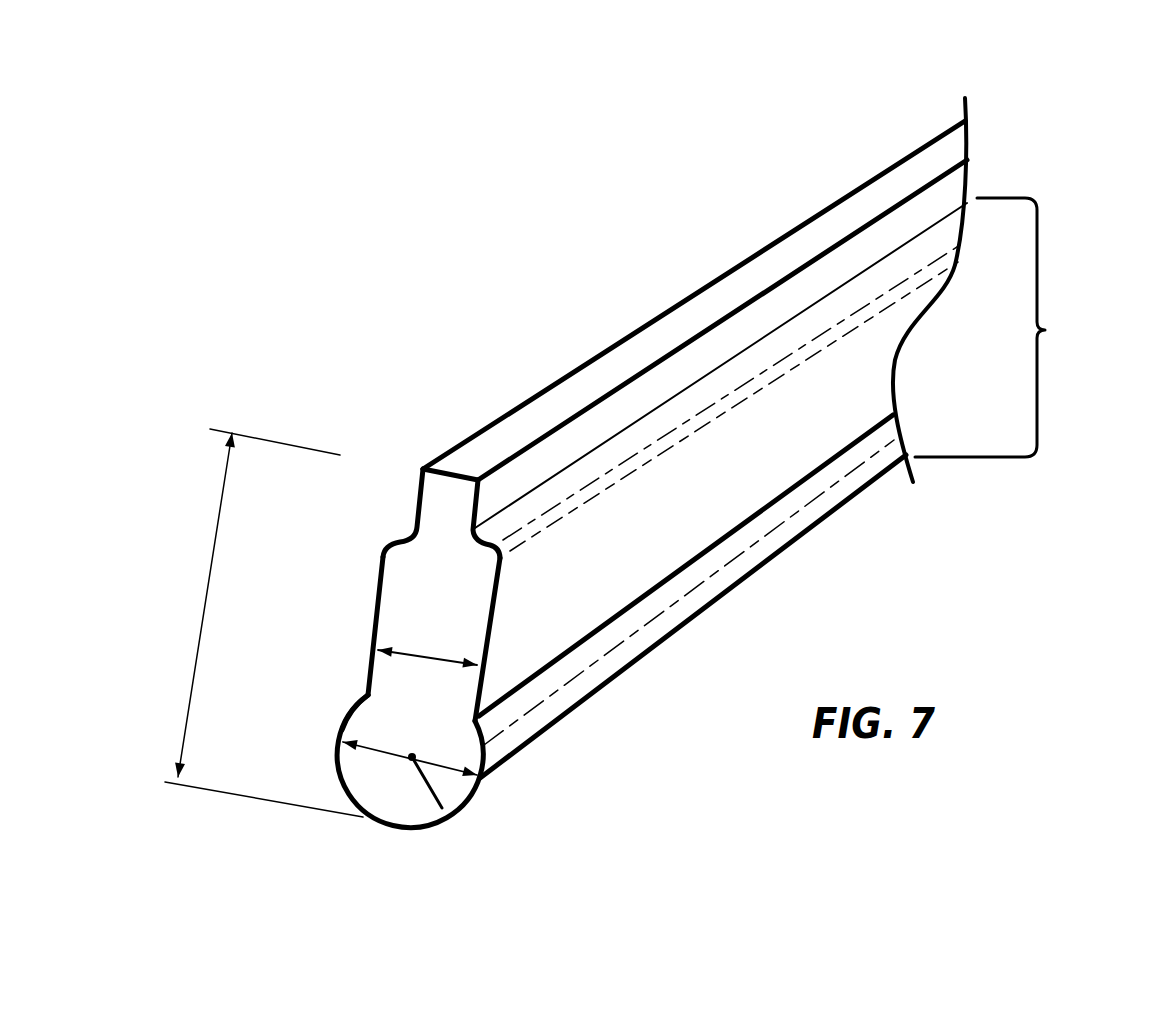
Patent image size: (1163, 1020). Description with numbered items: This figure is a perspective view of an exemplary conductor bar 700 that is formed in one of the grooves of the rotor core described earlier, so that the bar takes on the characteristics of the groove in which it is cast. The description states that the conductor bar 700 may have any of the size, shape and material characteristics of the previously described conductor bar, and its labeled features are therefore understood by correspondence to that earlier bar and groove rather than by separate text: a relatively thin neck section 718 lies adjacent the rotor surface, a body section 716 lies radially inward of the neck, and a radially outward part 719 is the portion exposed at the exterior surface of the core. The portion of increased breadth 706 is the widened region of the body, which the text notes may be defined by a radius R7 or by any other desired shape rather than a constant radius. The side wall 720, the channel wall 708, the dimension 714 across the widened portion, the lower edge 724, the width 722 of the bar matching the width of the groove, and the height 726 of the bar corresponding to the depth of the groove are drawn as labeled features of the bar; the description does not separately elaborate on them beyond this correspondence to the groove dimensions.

The conductor bar 700 is at (405, 338).
The circular channel portion 706 is at (350, 688).
The channel wall 708 is at (343, 720).
The channel diameter 714 is at (455, 763).
The length of channel member 716 is at (1047, 330).
The slot opening 718 is at (980, 170).
The top edge 719 is at (608, 373).
The side wall 720 is at (497, 615).
The slot width 722 is at (453, 657).
The bottom edge 724 is at (530, 762).
The height of channel member 726 is at (228, 478).
The channel radius R7 is at (432, 788).